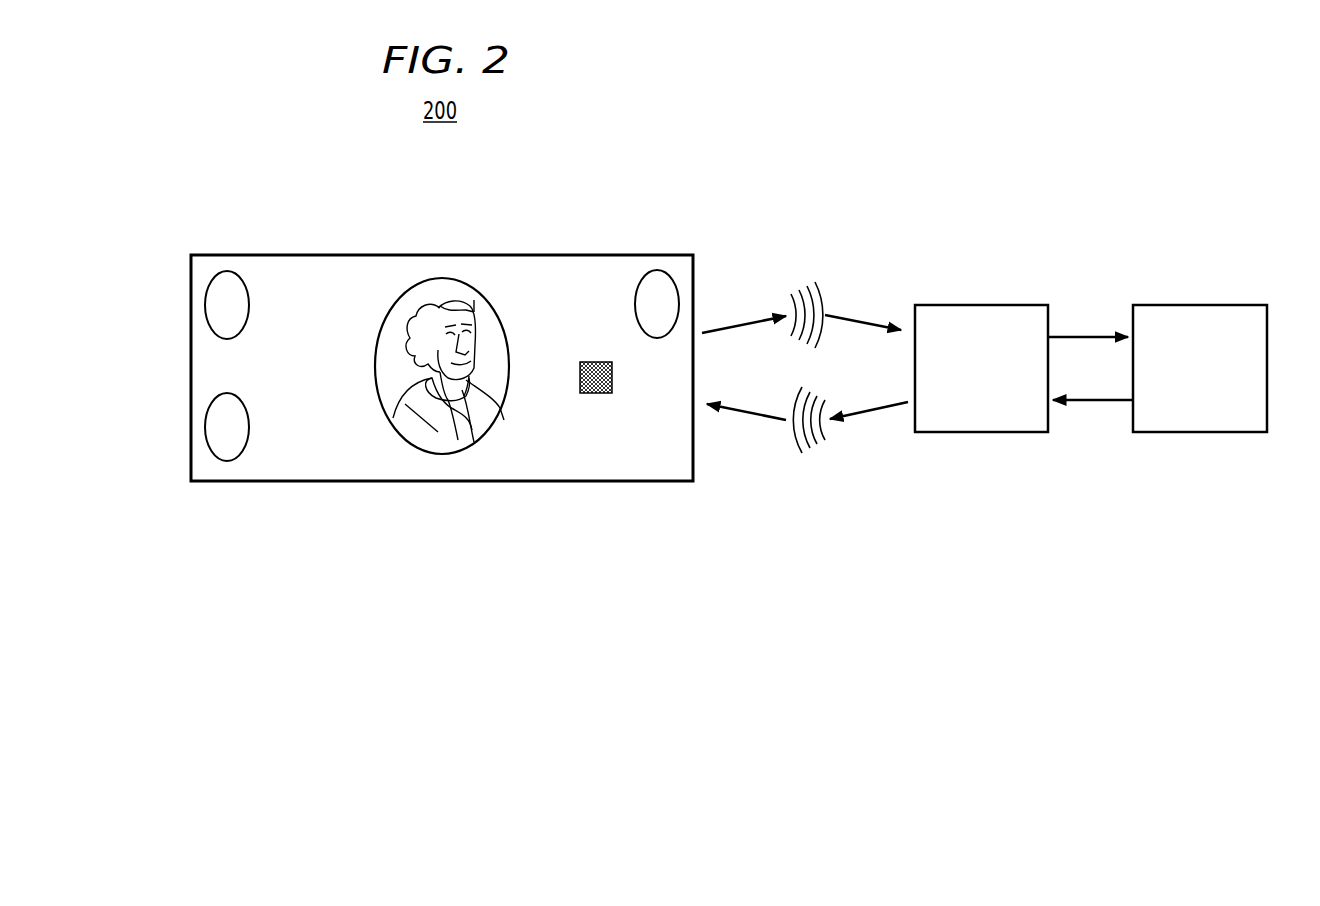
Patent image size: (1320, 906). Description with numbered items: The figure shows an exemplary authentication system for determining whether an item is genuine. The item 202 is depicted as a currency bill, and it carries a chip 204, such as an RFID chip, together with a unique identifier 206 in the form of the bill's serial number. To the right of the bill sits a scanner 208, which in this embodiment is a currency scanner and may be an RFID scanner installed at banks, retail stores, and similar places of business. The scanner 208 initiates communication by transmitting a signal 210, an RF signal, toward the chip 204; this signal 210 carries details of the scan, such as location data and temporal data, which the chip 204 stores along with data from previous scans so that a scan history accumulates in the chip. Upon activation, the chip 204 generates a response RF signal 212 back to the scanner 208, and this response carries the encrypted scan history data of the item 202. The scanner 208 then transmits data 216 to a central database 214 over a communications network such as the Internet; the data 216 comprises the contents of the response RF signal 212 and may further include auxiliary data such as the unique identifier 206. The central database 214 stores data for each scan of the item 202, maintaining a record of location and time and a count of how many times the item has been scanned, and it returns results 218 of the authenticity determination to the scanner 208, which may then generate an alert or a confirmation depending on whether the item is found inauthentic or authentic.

The item 202 is at (333, 255).
The chip 204 is at (596, 362).
The unique identifier 206 is at (530, 448).
The scanner 208 is at (976, 305).
The signal 210 is at (824, 459).
The response RF signal 212 is at (824, 280).
The central database 214 is at (1216, 305).
The data 216 is at (1091, 333).
The results 218 is at (1092, 404).